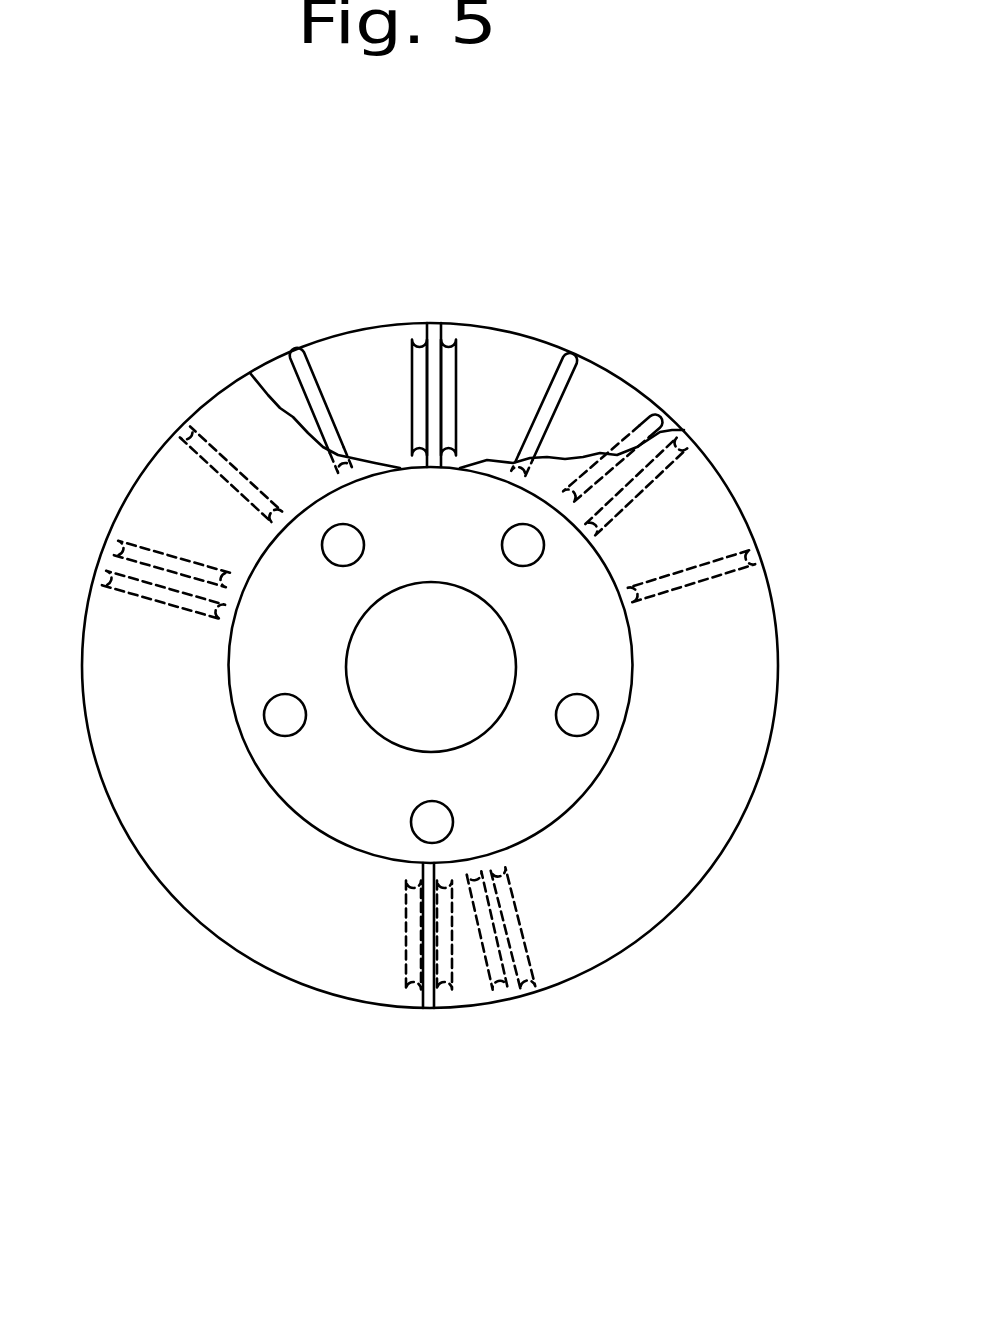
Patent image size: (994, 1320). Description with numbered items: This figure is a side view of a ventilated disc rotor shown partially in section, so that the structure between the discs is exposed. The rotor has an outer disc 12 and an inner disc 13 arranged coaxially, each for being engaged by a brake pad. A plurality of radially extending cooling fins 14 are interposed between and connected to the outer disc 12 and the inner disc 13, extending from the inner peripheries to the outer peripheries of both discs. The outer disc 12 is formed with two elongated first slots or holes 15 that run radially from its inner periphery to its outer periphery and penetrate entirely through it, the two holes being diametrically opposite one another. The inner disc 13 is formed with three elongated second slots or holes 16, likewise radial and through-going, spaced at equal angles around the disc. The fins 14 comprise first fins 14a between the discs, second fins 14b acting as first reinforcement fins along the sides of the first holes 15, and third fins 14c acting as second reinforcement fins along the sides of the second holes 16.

The outer disc 12 is at (182, 885).
The inner disc 13 is at (617, 395).
The cooling fins 14 is at (490, 212).
The first fins 14a is at (294, 352).
The second fins 14b is at (457, 330).
The third fins 14c is at (177, 597).
The first slots or holes 15 is at (432, 955).
The second slots or holes 16 is at (673, 435).